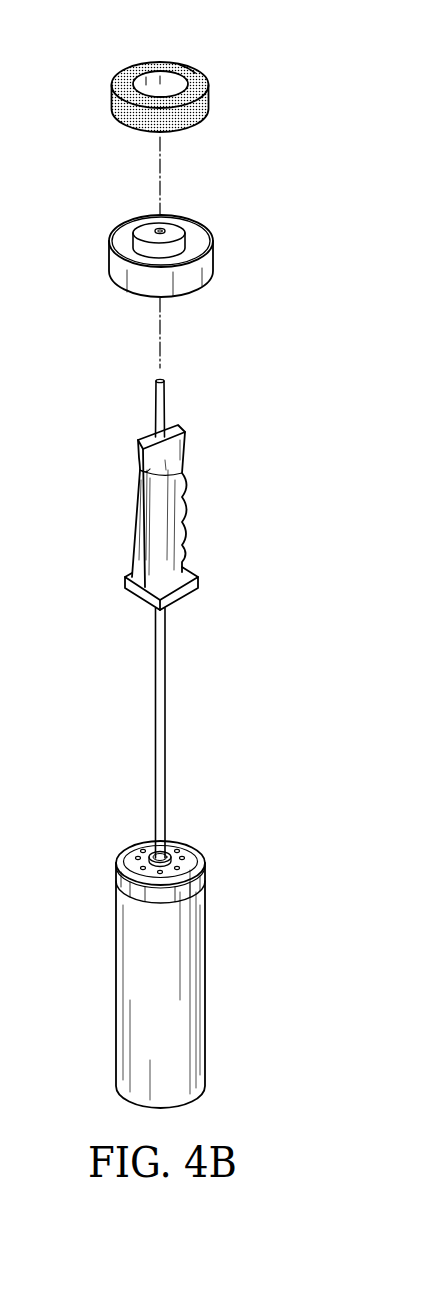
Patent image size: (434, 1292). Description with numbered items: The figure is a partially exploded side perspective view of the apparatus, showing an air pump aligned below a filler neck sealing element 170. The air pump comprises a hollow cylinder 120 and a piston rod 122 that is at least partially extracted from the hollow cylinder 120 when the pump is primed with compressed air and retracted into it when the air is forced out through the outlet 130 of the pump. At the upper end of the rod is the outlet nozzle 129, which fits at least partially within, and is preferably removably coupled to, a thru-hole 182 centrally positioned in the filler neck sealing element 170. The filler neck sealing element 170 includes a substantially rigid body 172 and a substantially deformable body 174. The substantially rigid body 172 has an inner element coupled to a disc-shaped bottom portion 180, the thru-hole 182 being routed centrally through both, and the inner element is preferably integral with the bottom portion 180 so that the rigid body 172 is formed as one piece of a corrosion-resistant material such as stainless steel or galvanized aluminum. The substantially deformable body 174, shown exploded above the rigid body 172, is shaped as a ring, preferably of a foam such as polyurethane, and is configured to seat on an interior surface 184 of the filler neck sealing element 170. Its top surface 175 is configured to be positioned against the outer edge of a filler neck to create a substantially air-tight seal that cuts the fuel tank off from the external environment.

The hollow cylinder 120 is at (206, 1018).
The piston rod 122 is at (167, 716).
The outlet nozzle 129 is at (167, 400).
The outlet 130 is at (159, 382).
The filler neck sealing element 170 is at (250, 68).
The substantially rigid body 172 is at (115, 287).
The substantially deformable body 174 is at (110, 118).
The top surface 175 is at (189, 72).
The disc-shaped bottom portion 180 is at (108, 258).
The thru-hole 182 is at (163, 229).
The interior surface 184 is at (122, 239).